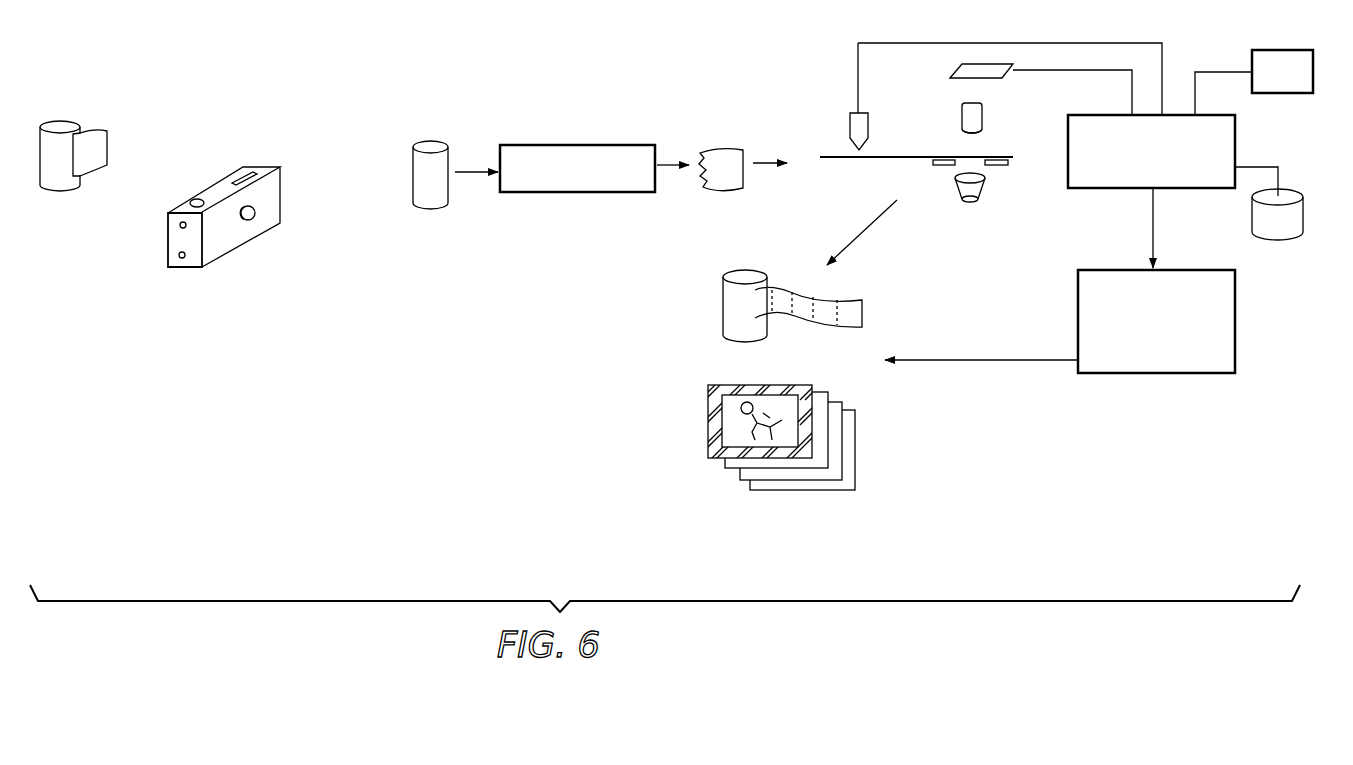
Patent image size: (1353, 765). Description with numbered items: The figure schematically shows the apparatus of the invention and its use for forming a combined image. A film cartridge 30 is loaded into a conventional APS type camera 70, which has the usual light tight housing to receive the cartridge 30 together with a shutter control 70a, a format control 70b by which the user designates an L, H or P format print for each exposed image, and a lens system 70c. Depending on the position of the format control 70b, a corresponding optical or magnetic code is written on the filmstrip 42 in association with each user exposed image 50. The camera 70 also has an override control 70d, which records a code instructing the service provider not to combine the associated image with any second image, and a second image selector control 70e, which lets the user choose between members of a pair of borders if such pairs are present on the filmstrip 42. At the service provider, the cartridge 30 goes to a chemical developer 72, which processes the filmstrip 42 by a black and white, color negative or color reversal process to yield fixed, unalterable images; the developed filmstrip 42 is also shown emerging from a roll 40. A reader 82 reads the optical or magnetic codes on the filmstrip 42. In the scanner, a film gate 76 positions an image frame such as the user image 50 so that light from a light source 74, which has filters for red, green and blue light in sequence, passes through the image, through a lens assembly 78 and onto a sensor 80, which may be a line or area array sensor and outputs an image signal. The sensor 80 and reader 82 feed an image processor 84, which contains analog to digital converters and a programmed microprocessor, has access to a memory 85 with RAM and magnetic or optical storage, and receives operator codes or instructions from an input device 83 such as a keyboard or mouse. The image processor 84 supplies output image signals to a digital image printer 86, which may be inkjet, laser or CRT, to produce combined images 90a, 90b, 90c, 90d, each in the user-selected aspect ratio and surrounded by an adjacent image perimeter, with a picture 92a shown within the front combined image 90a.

The film cartridge 30 is at (79, 112).
The developed film roll 40 is at (728, 302).
The filmstrip 42 is at (711, 194).
The user exposed image 50 is at (973, 153).
The APS type camera 70 is at (245, 270).
The shutter control 70a is at (196, 201).
The format control 70b is at (236, 176).
The lens system 70c is at (251, 221).
The override control 70d is at (181, 227).
The second image selector control 70e is at (181, 259).
The chemical developer 72 is at (563, 143).
The light source 74 is at (985, 189).
The film gate 76 is at (943, 167).
The lens assembly 78 is at (962, 117).
The sensor 80 is at (953, 70).
The reader 82 is at (848, 125).
The input device 83 is at (1250, 60).
The image processor 84 is at (1237, 130).
The memory 85 is at (1303, 202).
The digital image printer 86 is at (1237, 312).
The combined image 90a is at (679, 396).
The combined image 90b is at (737, 469).
The combined image 90c is at (740, 479).
The combined image 90d is at (772, 489).
The printed image 92a is at (727, 418).